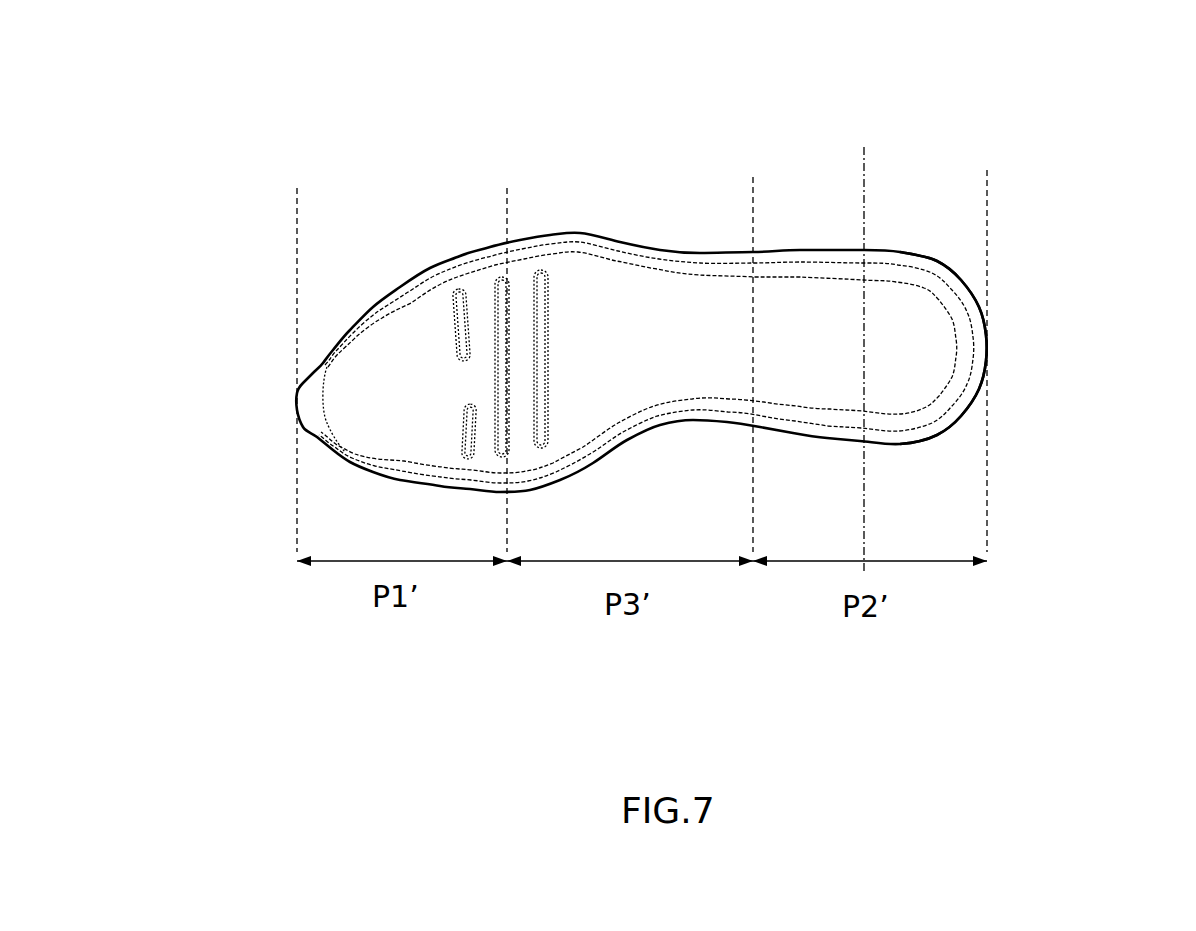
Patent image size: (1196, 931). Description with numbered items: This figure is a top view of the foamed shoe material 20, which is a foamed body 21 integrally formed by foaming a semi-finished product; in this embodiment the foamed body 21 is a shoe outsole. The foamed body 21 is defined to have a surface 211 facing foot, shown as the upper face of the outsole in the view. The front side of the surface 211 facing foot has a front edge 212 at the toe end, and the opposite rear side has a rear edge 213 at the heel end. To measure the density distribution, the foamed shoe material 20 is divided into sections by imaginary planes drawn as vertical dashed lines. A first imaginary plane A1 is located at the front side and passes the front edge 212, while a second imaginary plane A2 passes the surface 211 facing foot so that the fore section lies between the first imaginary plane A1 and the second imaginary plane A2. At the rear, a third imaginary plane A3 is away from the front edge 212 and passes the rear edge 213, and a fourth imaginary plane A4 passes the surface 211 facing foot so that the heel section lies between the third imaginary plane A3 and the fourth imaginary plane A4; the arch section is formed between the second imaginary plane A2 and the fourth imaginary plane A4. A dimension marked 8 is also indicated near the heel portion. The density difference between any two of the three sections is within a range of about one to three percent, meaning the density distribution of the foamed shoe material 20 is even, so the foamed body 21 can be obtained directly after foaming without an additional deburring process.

The foamed shoe material 20 is at (672, 272).
The foamed body 21 is at (383, 318).
The surface facing foot 211 is at (621, 315).
The front edge 212 is at (295, 410).
The rear edge 213 is at (988, 343).
The distance 8 is at (855, 172).
The first imaginary plane A1 is at (297, 253).
The second imaginary plane A2 is at (507, 208).
The third imaginary plane A3 is at (987, 224).
The fourth imaginary plane A4 is at (753, 212).